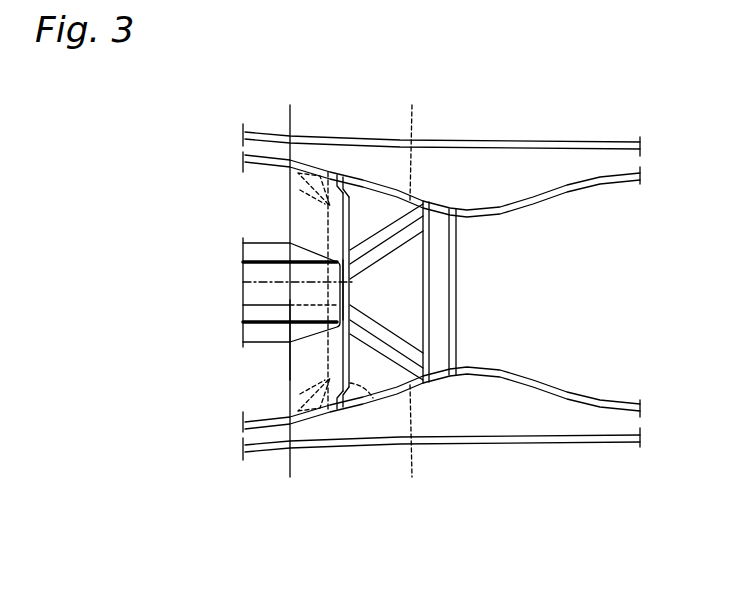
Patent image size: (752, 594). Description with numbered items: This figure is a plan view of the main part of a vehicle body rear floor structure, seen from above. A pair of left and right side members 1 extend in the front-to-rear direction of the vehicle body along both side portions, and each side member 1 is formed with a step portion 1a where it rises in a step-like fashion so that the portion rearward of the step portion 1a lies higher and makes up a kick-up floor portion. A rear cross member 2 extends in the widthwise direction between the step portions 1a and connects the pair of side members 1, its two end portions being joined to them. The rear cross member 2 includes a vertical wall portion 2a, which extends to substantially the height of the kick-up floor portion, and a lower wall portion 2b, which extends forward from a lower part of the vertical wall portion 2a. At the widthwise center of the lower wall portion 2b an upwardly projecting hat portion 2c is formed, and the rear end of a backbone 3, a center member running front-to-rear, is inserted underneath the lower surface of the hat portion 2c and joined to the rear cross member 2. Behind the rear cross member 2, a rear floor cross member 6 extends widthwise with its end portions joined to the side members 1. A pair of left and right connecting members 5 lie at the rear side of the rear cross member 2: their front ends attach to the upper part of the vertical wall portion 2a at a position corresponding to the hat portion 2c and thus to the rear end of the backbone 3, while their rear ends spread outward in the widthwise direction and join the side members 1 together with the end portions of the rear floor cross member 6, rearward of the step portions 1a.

The side member 1 is at (523, 140).
The step portion 1a is at (404, 115).
The rear cross member 2 is at (283, 204).
The vertical wall portion 2a is at (377, 386).
The lower wall portion 2b is at (303, 353).
The hat portion 2c is at (323, 296).
The backbone 3 is at (248, 272).
The connecting member 5 is at (387, 228).
The rear floor cross member 6 is at (458, 286).